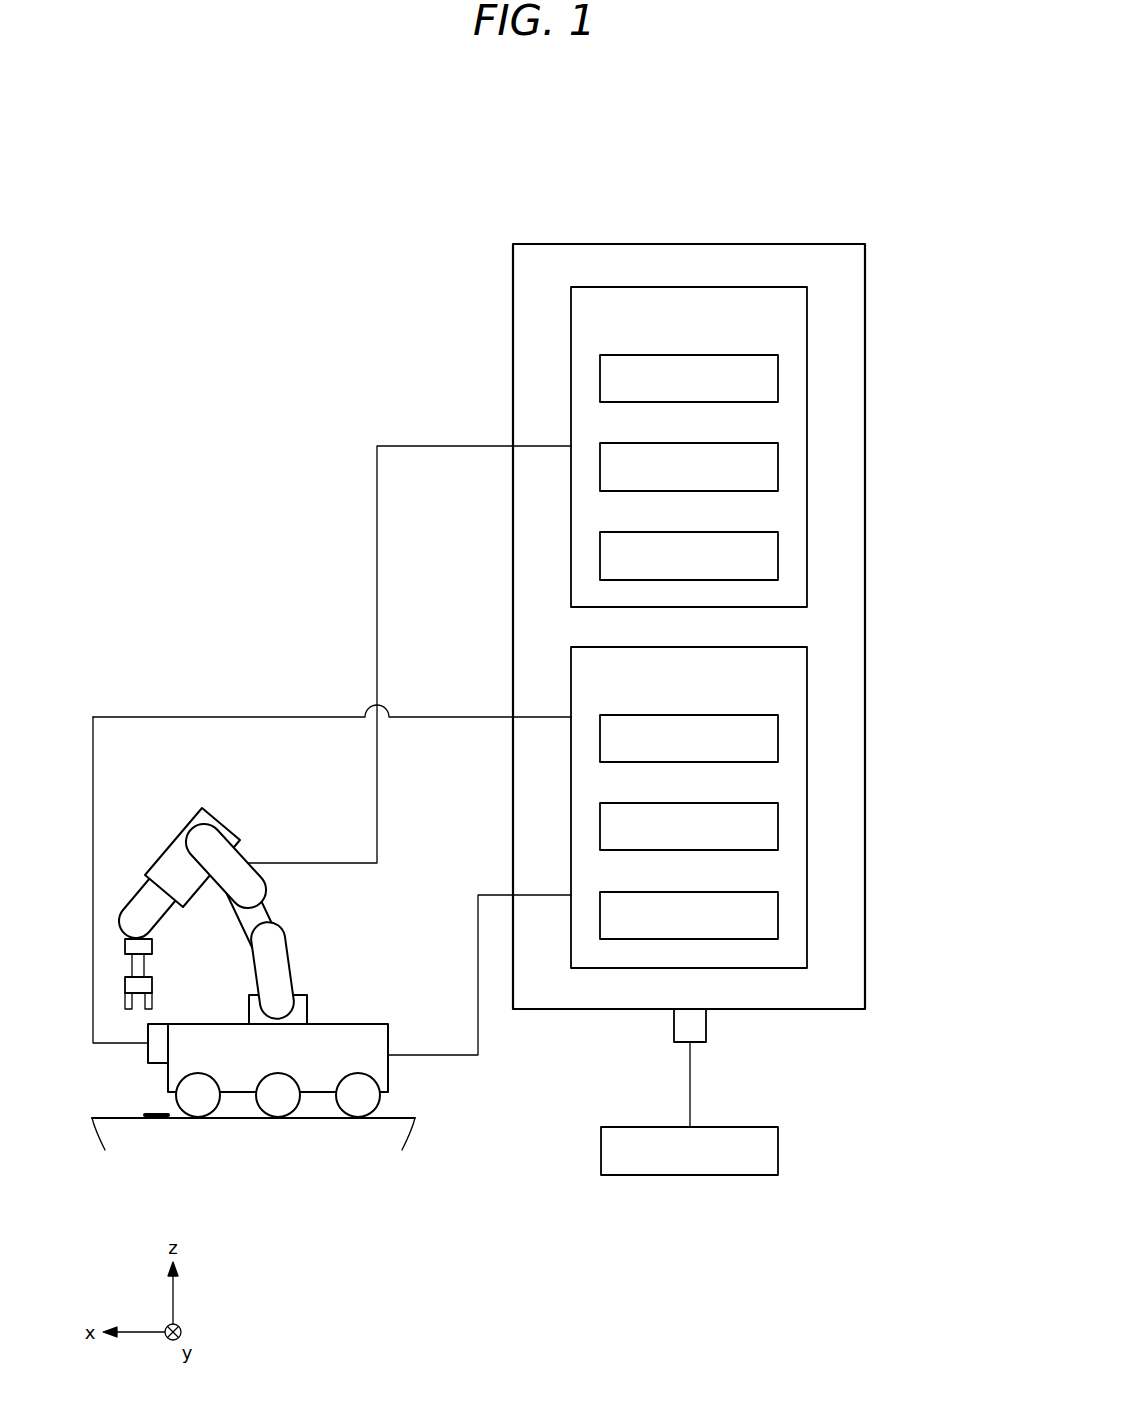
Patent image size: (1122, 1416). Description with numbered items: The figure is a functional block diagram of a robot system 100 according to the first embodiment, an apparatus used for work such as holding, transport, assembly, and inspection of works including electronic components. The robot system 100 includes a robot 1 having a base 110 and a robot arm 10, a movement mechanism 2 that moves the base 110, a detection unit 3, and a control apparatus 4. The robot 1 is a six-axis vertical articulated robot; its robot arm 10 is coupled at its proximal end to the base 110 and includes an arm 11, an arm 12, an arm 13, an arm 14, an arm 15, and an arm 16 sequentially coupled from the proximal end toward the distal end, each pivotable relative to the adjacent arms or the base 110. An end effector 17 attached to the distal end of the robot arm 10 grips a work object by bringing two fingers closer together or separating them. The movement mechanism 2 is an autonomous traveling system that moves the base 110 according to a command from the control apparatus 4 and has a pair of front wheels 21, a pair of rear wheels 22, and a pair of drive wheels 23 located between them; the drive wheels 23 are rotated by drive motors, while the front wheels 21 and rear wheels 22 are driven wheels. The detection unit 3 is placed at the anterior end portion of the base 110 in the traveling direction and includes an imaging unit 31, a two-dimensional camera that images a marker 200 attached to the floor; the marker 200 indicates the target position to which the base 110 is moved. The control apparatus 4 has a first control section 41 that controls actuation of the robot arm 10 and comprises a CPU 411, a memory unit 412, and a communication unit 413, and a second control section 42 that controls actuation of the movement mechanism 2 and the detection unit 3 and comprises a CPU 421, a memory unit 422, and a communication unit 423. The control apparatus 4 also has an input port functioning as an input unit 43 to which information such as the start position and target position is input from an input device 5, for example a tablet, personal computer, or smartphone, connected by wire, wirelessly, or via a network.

The robot system 100 is at (523, 144).
The control apparatus 4 is at (783, 244).
The first control section 41 is at (947, 363).
The CPU 411 is at (778, 378).
The memory unit 412 is at (778, 465).
The communication unit 413 is at (778, 552).
The second control section 42 is at (947, 722).
The CPU 421 is at (778, 738).
The memory unit 422 is at (778, 826).
The communication unit 423 is at (778, 912).
The input unit 43 is at (706, 1022).
The input device 5 is at (778, 1150).
The robot 1 is at (288, 796).
The robot arm 10 is at (219, 807).
The arm 11 is at (272, 970).
The arm 12 is at (257, 917).
The arm 13 is at (228, 870).
The arm 14 is at (170, 868).
The arm 15 is at (143, 912).
The arm 16 is at (138, 947).
The end effector 17 is at (138, 990).
The base 110 is at (363, 1023).
The movement mechanism 2 is at (260, 1100).
The front wheels 21 is at (198, 1103).
The rear wheels 22 is at (360, 1103).
The drive wheels 23 is at (279, 1103).
The imaging unit 31 is at (116, 1060).
The detection unit 3 is at (148, 1060).
The marker 200 is at (158, 1113).